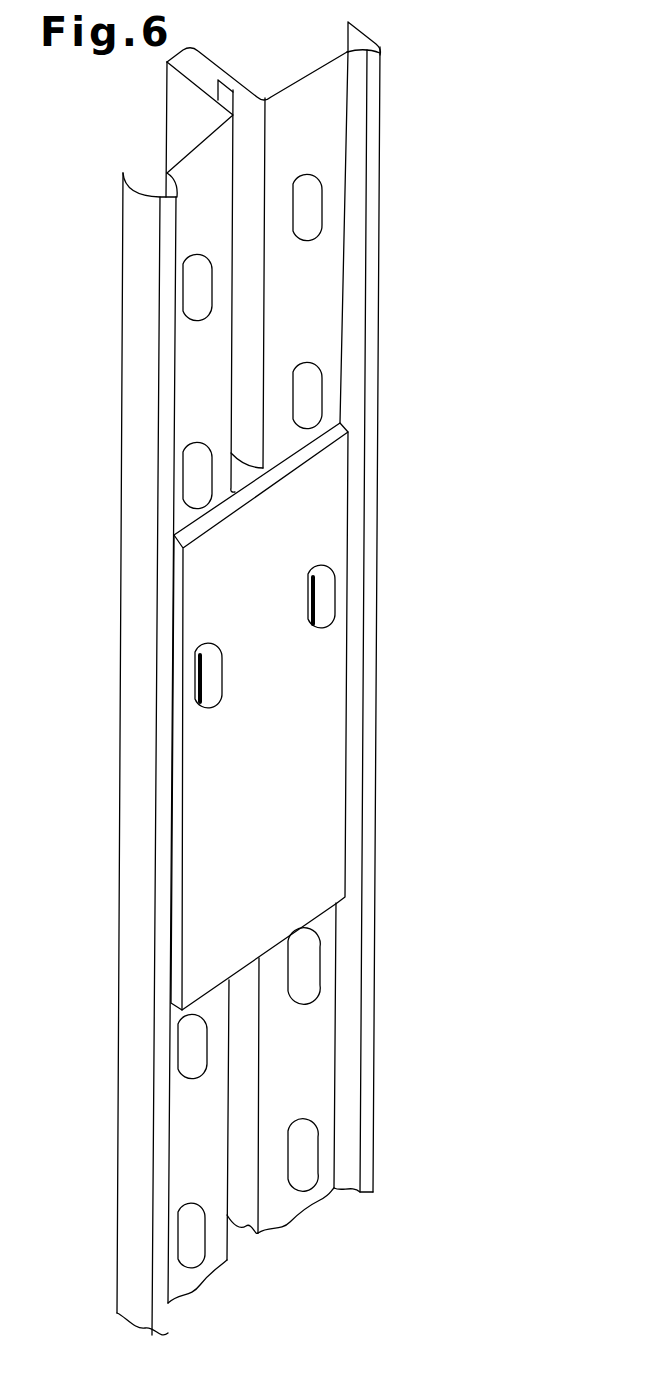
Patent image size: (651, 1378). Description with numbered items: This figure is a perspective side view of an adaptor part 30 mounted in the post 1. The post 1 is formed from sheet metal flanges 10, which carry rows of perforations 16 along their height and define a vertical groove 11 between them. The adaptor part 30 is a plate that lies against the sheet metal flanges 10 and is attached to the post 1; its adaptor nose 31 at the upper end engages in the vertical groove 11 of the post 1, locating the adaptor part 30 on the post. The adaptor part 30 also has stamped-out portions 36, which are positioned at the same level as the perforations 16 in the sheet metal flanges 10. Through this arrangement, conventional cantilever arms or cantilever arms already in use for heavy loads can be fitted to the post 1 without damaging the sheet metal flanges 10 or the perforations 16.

The post 1 is at (417, 235).
The sheet metal flange 10 is at (193, 180).
The vertical groove 11 is at (233, 1233).
The perforation 16 is at (298, 1175).
The adaptor part 30 is at (290, 853).
The adaptor nose 31 is at (240, 468).
The stamped-out portion 36 is at (312, 633).